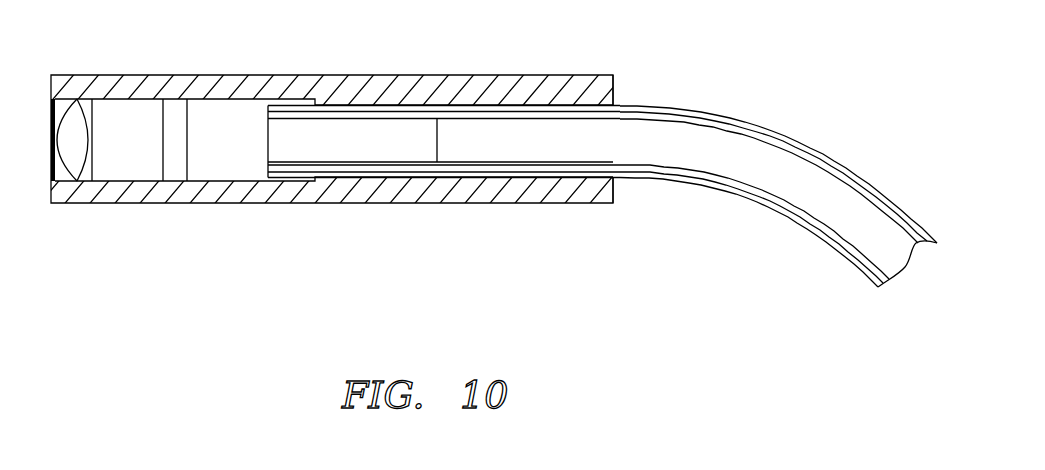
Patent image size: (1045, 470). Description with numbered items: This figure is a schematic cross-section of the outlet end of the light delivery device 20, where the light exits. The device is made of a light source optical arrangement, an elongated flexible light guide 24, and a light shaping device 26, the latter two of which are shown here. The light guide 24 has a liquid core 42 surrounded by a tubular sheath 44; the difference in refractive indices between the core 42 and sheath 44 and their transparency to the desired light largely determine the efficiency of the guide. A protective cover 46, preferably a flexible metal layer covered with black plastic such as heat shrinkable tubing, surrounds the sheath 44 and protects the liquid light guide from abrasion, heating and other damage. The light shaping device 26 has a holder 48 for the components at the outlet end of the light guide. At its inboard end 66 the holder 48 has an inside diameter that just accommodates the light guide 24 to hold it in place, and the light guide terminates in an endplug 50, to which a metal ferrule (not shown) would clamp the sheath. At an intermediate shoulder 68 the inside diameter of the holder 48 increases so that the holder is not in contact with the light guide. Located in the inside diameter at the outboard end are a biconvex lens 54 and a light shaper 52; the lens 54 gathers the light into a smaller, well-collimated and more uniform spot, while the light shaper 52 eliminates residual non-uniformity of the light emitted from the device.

The light delivery device 20 is at (468, 179).
The elongated flexible light guide 24 is at (778, 221).
The light shaping device 26 is at (378, 165).
The liquid core 42 is at (733, 147).
The tubular sheath 44 is at (817, 162).
The protective cover 46 is at (871, 190).
The holder 48 is at (250, 76).
The endplug 50 is at (338, 142).
The light shaper 52 is at (187, 130).
The biconvex lens 54 is at (95, 100).
The inboard end 66 is at (615, 92).
The intermediate shoulder 68 is at (317, 176).